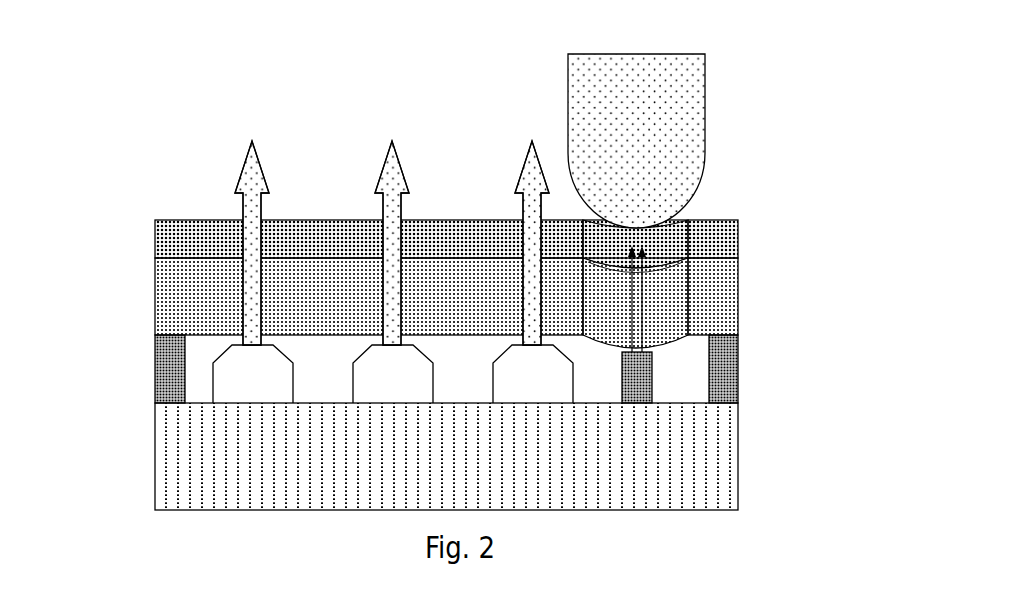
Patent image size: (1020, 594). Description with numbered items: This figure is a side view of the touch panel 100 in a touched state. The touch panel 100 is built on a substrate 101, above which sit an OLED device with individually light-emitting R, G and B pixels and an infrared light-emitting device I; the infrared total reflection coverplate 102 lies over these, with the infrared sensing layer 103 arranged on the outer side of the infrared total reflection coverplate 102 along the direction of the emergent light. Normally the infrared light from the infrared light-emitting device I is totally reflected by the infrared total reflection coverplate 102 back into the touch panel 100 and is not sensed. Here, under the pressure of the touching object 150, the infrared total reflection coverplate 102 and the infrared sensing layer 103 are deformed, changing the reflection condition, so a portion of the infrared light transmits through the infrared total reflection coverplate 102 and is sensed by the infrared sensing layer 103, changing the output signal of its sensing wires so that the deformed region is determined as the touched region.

The touch panel 100 is at (462, 325).
The substrate 101 is at (175, 452).
The infrared total reflection coverplate 102 is at (175, 297).
The infrared sensing layer 103 is at (177, 240).
The touching object 150 is at (670, 103).